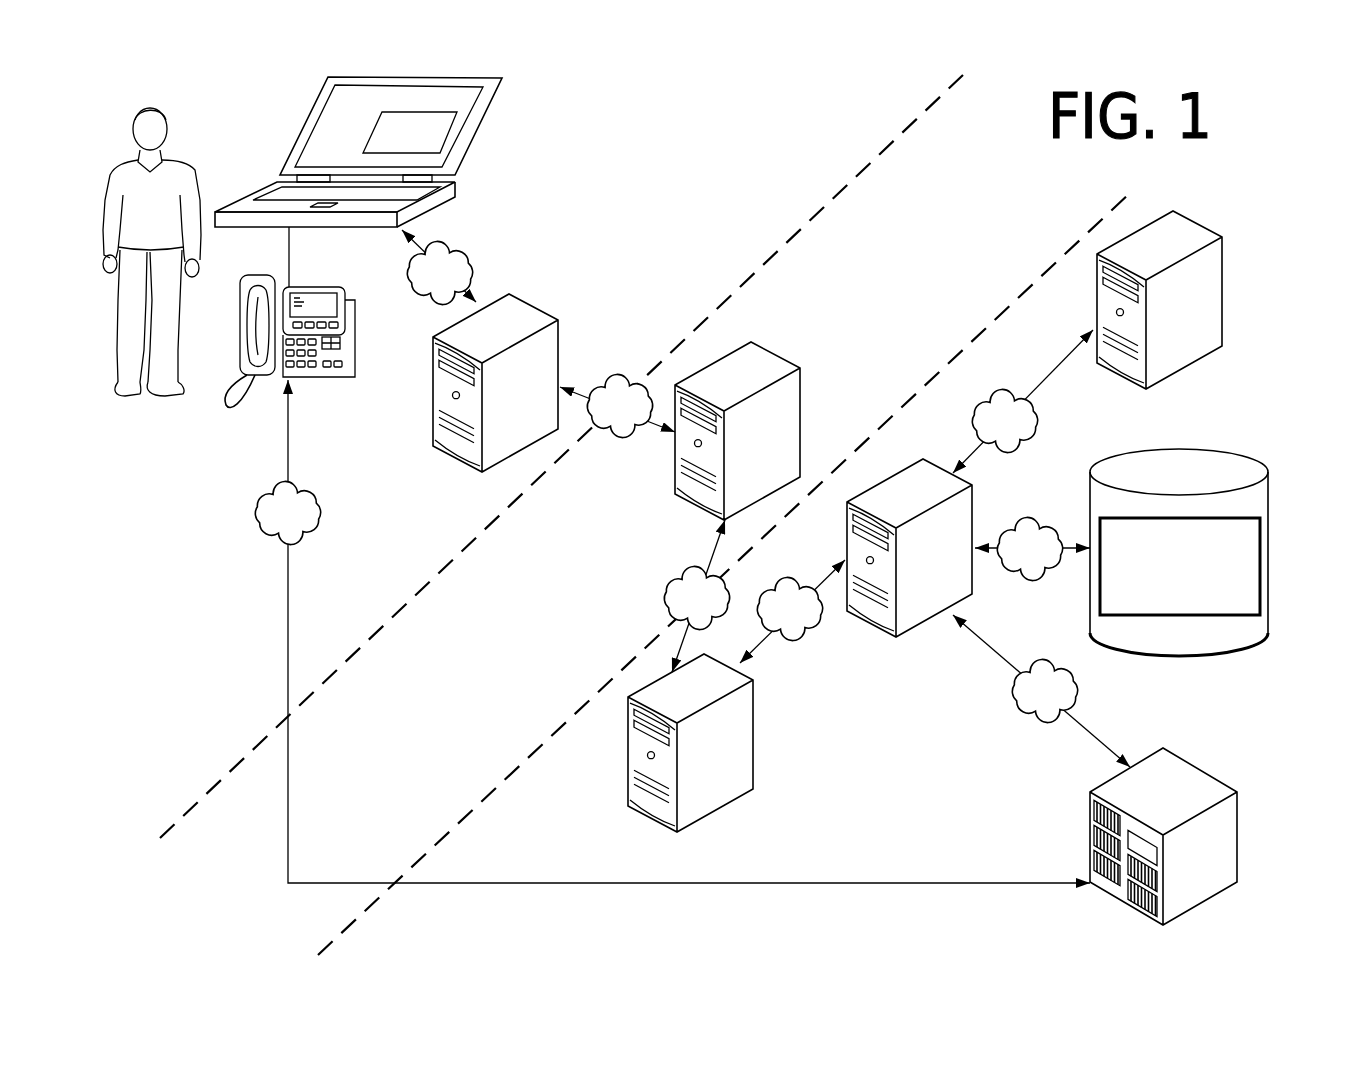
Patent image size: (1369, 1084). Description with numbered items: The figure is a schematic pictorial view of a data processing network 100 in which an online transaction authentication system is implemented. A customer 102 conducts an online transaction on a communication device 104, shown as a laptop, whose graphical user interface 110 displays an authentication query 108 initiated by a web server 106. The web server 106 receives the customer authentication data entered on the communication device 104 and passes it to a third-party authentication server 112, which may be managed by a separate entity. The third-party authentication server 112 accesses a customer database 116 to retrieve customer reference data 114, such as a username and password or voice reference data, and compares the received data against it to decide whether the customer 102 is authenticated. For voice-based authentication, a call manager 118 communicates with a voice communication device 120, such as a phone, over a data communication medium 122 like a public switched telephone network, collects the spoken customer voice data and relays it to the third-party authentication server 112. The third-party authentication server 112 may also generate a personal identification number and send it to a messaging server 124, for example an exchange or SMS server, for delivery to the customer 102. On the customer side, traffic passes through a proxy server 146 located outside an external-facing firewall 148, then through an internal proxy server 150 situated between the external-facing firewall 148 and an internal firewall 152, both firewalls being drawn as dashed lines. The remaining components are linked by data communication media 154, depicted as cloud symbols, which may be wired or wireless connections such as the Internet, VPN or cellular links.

The data processing network 100 is at (656, 95).
The customer 102 is at (123, 167).
The communication device 104 is at (388, 152).
The web server 106 is at (756, 742).
The authentication query 108 is at (452, 138).
The graphical user interface 110 is at (390, 128).
The third-party authentication server 112 is at (920, 467).
The customer reference data 114 is at (1264, 565).
The customer database 116 is at (1212, 568).
The call manager 118 is at (1238, 813).
The voice communication device 120 is at (335, 378).
The data communication medium 122 is at (271, 524).
The messaging server 124 is at (1223, 257).
The proxy server 146 is at (530, 302).
The external-facing firewall 148 is at (740, 290).
The internal proxy server 150 is at (776, 349).
The internal firewall 152 is at (945, 372).
The data communication media 154 is at (423, 284).